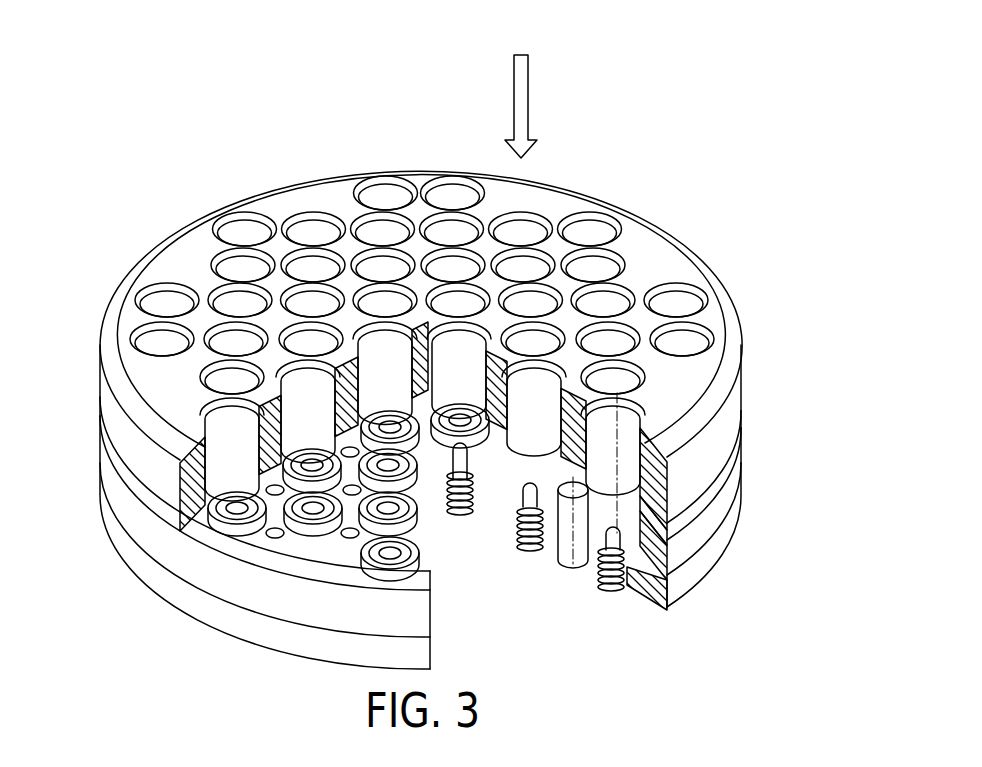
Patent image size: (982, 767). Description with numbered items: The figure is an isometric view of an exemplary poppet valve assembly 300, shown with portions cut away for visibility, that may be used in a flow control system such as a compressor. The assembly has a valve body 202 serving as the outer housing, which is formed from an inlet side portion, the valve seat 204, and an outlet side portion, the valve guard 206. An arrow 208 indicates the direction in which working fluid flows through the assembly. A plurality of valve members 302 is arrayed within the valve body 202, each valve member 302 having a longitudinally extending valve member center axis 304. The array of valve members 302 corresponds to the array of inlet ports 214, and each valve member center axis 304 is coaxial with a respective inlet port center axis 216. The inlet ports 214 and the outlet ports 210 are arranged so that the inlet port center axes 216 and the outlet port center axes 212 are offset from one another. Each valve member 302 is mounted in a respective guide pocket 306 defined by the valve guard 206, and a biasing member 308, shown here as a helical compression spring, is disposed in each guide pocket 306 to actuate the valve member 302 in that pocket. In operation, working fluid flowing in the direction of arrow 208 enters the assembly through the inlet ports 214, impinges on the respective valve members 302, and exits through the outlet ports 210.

The valve body 202 is at (748, 438).
The valve seat 204 is at (107, 318).
The valve guard 206 is at (137, 518).
The arrow 208 is at (528, 98).
The outlet ports 210 is at (568, 560).
The outlet port center axes 212 is at (573, 570).
The inlet ports 214 is at (625, 390).
The inlet port center axis 216 is at (632, 380).
The poppet valve assembly 300 is at (722, 111).
The valve member 302 is at (662, 540).
The valve member center axis 304 is at (632, 600).
The guide pocket 306 is at (652, 581).
The biasing member 308 is at (608, 598).